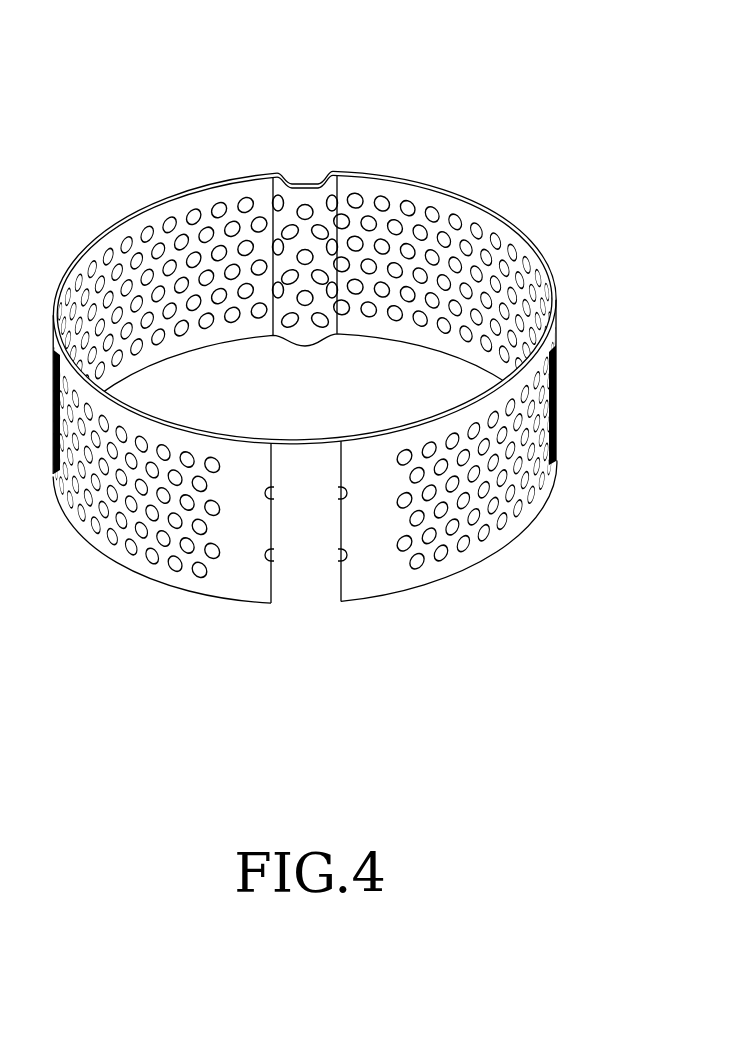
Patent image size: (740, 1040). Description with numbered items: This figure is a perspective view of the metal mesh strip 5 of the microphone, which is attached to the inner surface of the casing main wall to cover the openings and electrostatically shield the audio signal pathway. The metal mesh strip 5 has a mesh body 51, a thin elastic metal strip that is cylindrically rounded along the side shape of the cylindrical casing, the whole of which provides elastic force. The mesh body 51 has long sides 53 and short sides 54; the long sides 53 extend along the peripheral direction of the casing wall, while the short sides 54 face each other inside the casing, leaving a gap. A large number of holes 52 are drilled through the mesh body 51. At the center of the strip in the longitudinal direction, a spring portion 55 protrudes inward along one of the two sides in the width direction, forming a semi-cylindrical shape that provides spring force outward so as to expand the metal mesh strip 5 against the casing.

The metal mesh strip 5 is at (322, 354).
The mesh body 51 is at (230, 582).
The holes 52 is at (196, 573).
The long sides 53 is at (532, 244).
The short sides 54 is at (275, 588).
The spring portion 55 is at (305, 184).